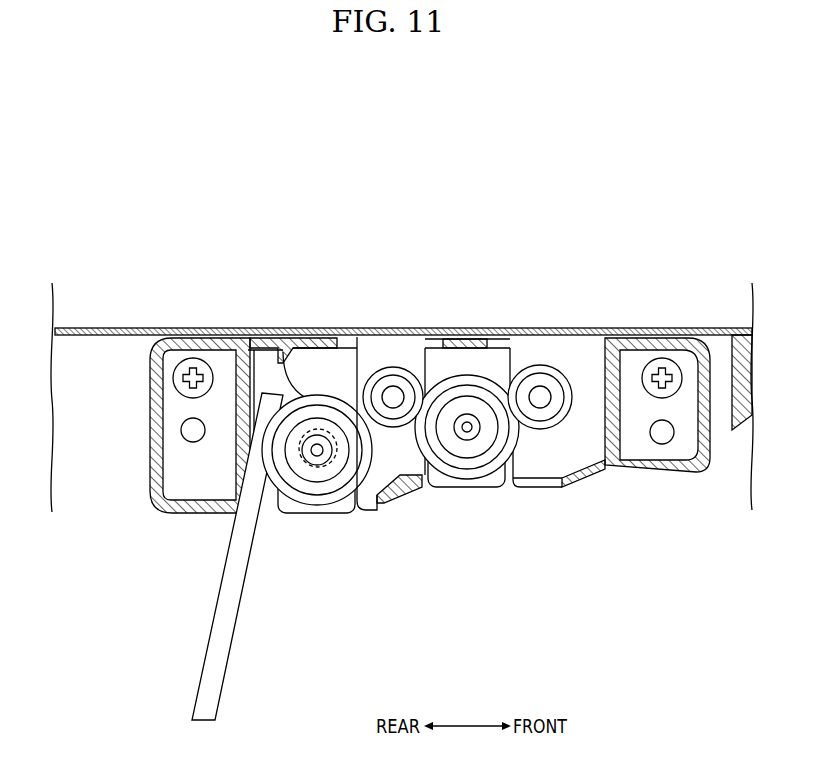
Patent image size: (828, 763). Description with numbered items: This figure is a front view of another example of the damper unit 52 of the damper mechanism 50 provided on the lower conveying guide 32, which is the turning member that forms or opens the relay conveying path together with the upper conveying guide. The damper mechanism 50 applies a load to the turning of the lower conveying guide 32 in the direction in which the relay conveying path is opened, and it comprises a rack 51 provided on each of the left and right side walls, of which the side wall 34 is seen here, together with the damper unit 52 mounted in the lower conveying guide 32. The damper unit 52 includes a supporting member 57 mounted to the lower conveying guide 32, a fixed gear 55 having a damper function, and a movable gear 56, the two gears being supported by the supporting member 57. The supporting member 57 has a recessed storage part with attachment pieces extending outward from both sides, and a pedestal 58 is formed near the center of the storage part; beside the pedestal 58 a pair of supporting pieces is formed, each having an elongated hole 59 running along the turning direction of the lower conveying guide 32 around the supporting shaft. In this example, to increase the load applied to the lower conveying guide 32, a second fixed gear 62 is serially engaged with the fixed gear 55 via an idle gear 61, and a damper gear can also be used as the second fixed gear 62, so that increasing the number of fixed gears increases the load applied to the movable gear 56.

The damper mechanism 50 is at (335, 203).
The lower conveying guide 32 is at (152, 328).
The side wall 34 is at (103, 500).
The rack 51 is at (243, 585).
The damper unit 52 is at (445, 520).
The fixed gear 55 is at (373, 366).
The movable gear 56 is at (300, 396).
The supporting member 57 is at (195, 338).
The pedestal 58 is at (401, 349).
The elongated hole 59 is at (336, 432).
The idle gear 61 is at (474, 376).
The second fixed gear 62 is at (546, 366).